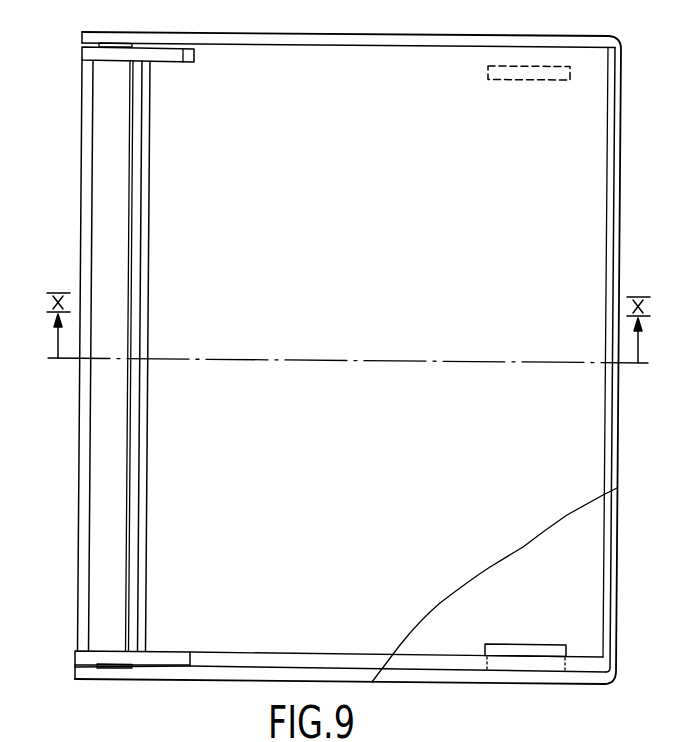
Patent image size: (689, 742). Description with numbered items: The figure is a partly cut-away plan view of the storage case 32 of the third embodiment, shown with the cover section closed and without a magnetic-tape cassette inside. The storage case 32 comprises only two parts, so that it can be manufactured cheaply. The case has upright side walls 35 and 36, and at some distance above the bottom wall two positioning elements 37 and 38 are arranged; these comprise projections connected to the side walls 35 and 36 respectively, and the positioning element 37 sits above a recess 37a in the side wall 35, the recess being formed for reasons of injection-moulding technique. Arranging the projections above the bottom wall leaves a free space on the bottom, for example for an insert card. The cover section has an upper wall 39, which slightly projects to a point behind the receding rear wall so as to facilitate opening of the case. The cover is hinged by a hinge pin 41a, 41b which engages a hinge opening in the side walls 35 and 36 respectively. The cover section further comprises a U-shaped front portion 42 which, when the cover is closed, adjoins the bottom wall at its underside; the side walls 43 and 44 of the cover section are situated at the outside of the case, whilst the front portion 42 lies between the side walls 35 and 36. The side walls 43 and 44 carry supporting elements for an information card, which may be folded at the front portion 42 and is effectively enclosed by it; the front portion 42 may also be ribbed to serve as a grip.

The storage case 32 is at (624, 561).
The side wall 35 is at (177, 661).
The side wall 36 is at (168, 58).
The positioning element 37 is at (522, 650).
The recess 37a is at (527, 666).
The positioning element 38 is at (542, 72).
The upper wall 39 is at (592, 252).
The hinge pin 41a is at (102, 667).
The hinge pin 41b is at (112, 43).
The front portion 42 is at (84, 427).
The side wall of the cover section 43 is at (263, 675).
The side wall of the cover section 44 is at (274, 43).